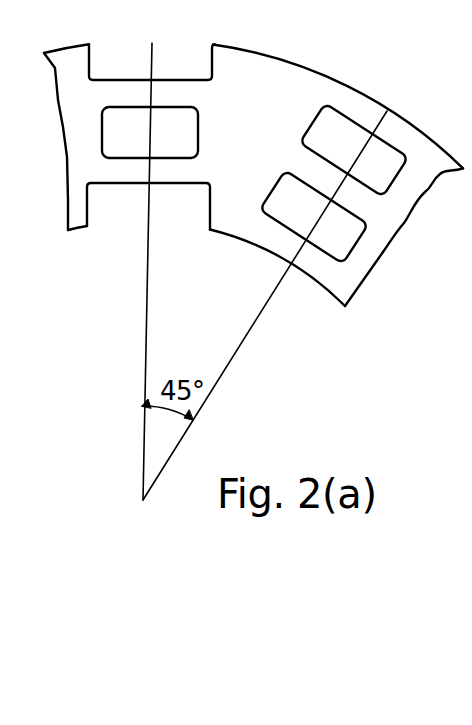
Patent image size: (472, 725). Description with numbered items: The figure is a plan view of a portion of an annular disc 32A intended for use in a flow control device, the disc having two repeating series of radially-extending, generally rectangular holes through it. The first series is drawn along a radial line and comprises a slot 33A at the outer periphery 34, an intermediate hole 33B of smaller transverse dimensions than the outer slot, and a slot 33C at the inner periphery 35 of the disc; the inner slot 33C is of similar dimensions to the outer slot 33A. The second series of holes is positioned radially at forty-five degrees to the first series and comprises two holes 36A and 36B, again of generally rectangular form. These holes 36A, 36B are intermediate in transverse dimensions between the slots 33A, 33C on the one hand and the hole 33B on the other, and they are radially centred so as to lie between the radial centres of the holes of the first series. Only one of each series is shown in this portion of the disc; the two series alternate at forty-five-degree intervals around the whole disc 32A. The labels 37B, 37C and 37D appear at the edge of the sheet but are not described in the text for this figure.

The annular disc 32A is at (306, 62).
The slot 33A is at (203, 62).
The intermediate hole 33B is at (127, 138).
The slot 33C is at (210, 210).
The outer periphery 34 is at (73, 45).
The inner periphery 35 is at (254, 246).
The hole 36A is at (373, 143).
The hole 36B is at (345, 238).
The reference label 37B is at (454, 421).
The reference label 37C is at (454, 469).
The reference label 37D is at (454, 514).